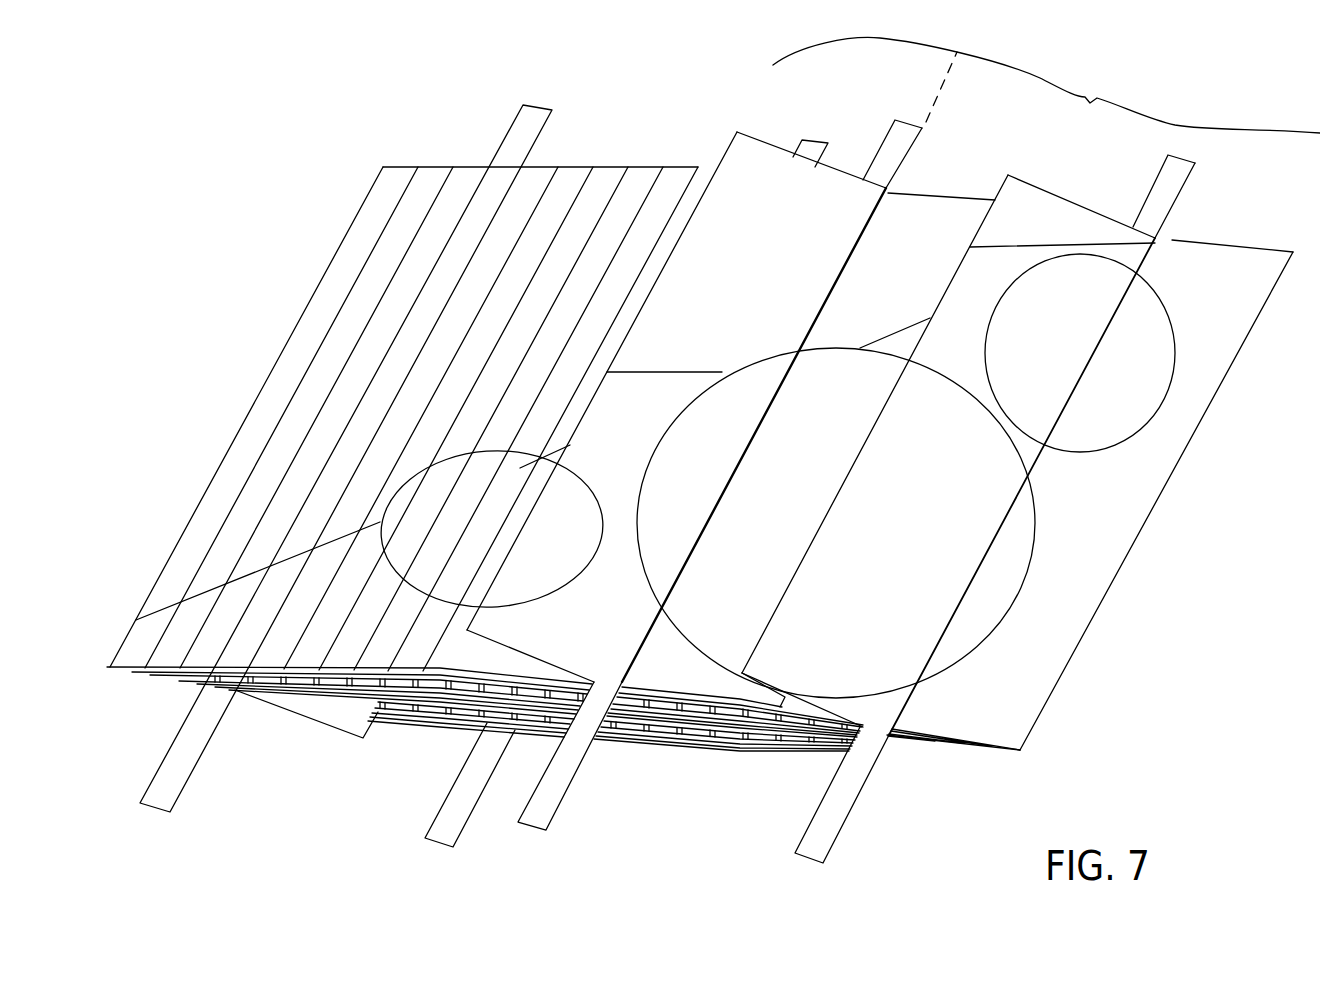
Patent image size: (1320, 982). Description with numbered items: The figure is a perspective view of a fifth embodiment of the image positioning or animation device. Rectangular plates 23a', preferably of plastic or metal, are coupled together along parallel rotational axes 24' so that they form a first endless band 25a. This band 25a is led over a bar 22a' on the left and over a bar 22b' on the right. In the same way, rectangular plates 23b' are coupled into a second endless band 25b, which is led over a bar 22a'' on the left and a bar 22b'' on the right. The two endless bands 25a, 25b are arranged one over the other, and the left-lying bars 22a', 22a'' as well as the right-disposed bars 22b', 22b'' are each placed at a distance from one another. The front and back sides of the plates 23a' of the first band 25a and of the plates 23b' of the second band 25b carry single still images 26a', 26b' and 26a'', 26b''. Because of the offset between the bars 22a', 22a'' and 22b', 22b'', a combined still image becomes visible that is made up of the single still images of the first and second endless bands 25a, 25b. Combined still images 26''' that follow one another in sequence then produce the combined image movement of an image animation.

The bar 22a' is at (346, 466).
The bar 22a'' is at (601, 504).
The bar 22b' is at (720, 511).
The bar 22b'' is at (995, 531).
The rectangular plate 23a' is at (698, 353).
The rectangular plate 23b' is at (836, 590).
The rotational axis 24' is at (931, 87).
The endless band 25a is at (244, 366).
The endless band 25b is at (1188, 492).
The still image 26a' is at (941, 182).
The still image 26a'' is at (1131, 233).
The still image 26b' is at (517, 638).
The still image 26b'' is at (881, 753).
The combined still image 26''' is at (1046, 85).